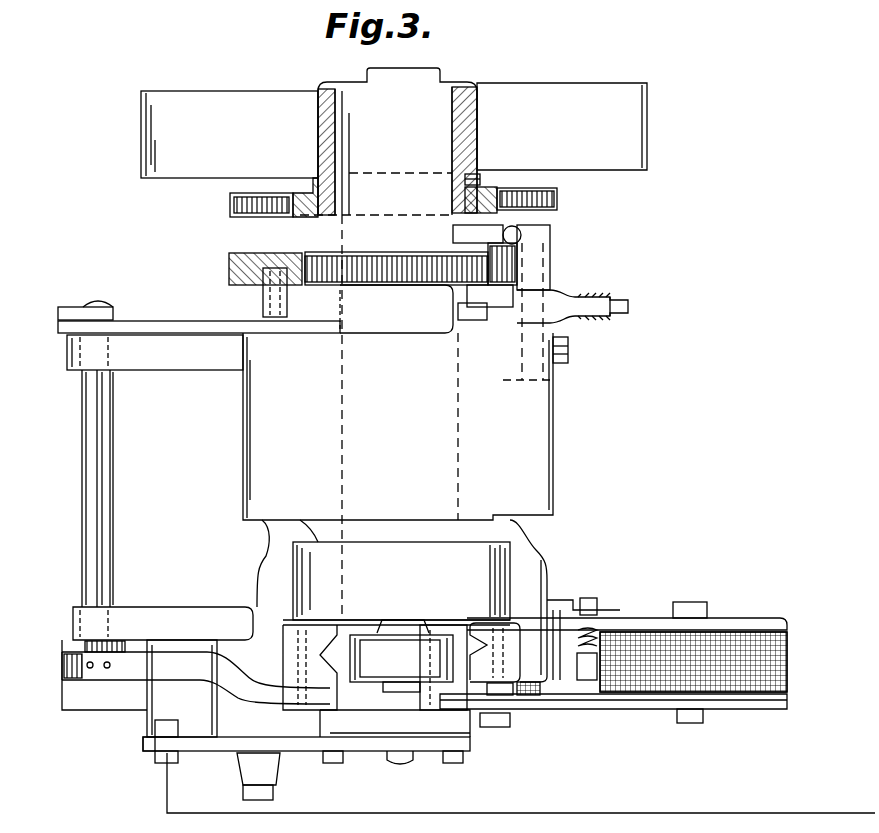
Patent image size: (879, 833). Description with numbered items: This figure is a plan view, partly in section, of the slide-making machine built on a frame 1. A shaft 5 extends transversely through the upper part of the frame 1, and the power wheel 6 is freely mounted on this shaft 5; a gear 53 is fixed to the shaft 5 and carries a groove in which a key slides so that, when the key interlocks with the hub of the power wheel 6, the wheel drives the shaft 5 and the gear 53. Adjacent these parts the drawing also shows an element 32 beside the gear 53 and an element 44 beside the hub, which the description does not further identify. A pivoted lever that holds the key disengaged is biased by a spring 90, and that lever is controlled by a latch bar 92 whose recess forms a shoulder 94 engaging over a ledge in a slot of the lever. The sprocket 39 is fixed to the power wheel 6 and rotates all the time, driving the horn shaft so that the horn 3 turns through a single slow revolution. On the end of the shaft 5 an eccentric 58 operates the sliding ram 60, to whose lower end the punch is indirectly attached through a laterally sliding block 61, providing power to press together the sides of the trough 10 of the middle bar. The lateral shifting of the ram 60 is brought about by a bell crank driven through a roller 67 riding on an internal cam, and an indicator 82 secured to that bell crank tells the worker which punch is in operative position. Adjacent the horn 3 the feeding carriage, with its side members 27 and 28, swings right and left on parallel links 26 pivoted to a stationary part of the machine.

The frame 1 is at (243, 425).
The horn 3 is at (373, 753).
The shaft 5 is at (388, 342).
The power wheel 6 is at (141, 167).
The trough 10 is at (58, 307).
The parallel links 26 is at (505, 713).
The side member 27 is at (649, 704).
The side member 28 is at (740, 626).
The collar 32 is at (229, 266).
The sprocket 39 is at (230, 210).
The bearing 44 is at (480, 193).
The gear 53 is at (330, 255).
The eccentric 58 is at (350, 682).
The sliding ram 60 is at (440, 713).
The laterally sliding block 61 is at (143, 745).
The roller 67 is at (263, 303).
The indicator 82 is at (178, 668).
The spring 90 is at (607, 290).
The latch bar 92 is at (490, 320).
The shoulder 94 is at (453, 299).